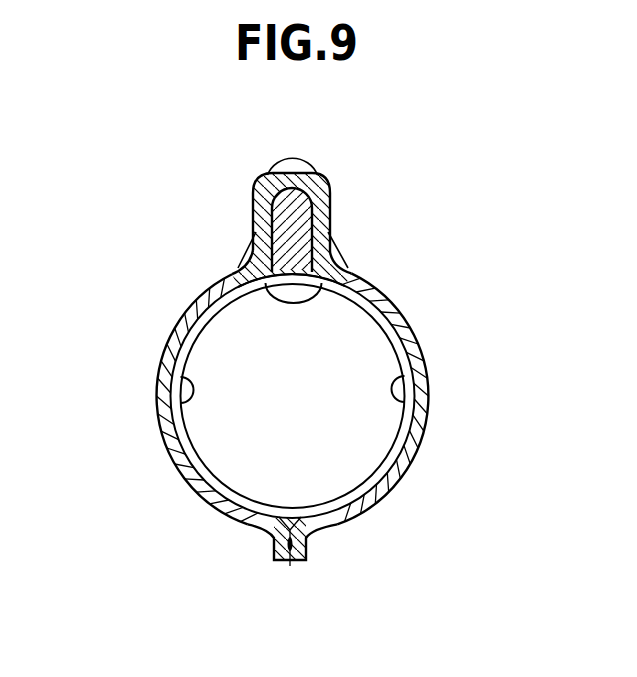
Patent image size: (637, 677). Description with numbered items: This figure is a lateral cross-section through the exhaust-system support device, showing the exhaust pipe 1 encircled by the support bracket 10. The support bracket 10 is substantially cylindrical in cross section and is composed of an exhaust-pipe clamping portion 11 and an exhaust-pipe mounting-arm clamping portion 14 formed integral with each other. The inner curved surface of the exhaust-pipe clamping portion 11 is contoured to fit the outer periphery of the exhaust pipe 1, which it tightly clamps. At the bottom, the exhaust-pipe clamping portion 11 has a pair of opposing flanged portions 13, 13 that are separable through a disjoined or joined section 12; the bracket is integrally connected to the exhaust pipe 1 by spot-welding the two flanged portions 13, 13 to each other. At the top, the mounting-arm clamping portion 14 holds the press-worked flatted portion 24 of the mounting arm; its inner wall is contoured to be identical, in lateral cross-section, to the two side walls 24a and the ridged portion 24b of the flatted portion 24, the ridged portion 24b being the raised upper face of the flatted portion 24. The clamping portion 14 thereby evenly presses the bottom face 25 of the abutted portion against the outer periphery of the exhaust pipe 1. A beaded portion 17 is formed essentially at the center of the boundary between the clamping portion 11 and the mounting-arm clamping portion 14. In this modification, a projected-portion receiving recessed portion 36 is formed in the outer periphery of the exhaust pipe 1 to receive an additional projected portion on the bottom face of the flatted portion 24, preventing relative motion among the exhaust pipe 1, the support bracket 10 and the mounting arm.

The exhaust pipe 1 is at (398, 442).
The exhaust-system support bracket 10 is at (175, 318).
The exhaust-pipe clamping portion 11 is at (180, 462).
The disjoined or joined section 12 is at (289, 562).
The flanged portions 13 is at (307, 553).
The exhaust-pipe mounting-arm clamping portion 14 is at (330, 197).
The beaded portion 17 is at (345, 248).
The flatted portion 24 is at (262, 199).
The side walls 24a is at (278, 206).
The ridged portion 24b is at (268, 174).
The bottom face 25 is at (301, 294).
The projected-portion receiving recessed portion 36 is at (278, 294).